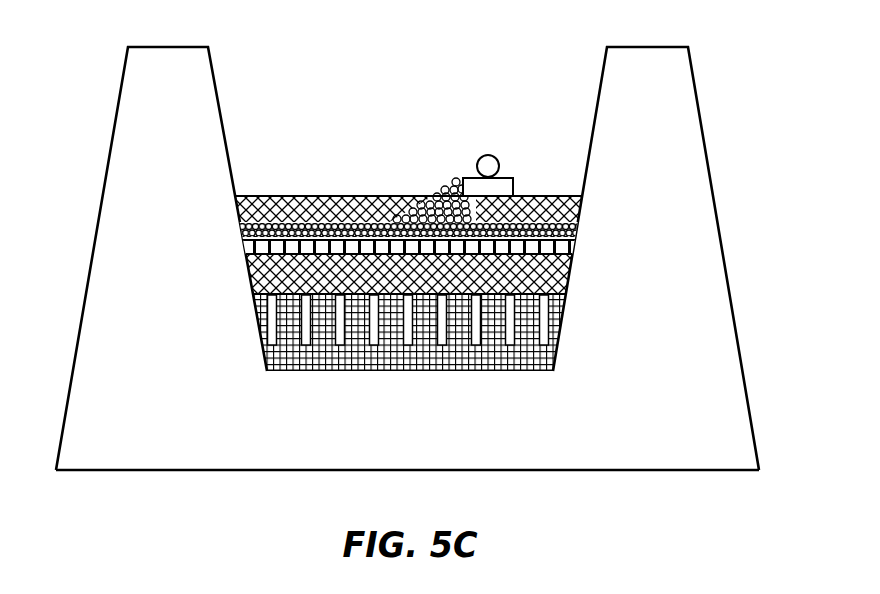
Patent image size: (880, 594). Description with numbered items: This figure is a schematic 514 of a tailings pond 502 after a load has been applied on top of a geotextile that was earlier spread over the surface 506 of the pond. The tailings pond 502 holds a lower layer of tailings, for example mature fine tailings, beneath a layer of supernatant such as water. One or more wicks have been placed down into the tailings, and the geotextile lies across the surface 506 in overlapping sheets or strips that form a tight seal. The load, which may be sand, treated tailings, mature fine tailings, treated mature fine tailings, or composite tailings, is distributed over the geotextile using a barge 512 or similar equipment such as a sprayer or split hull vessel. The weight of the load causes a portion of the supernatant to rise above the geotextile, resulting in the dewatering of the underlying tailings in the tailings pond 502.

The tailings pond 502 is at (389, 434).
The surface 506 is at (293, 196).
The barge 512 is at (506, 178).
The schematic 514 is at (428, 28).